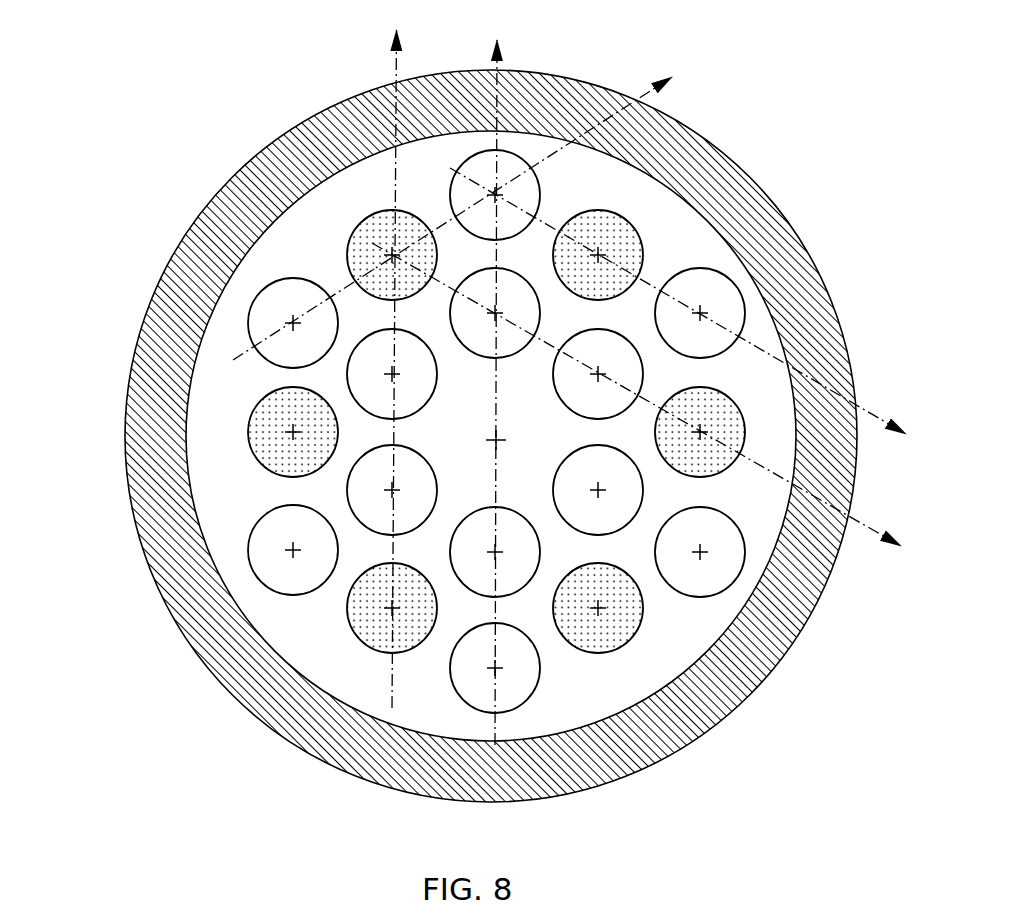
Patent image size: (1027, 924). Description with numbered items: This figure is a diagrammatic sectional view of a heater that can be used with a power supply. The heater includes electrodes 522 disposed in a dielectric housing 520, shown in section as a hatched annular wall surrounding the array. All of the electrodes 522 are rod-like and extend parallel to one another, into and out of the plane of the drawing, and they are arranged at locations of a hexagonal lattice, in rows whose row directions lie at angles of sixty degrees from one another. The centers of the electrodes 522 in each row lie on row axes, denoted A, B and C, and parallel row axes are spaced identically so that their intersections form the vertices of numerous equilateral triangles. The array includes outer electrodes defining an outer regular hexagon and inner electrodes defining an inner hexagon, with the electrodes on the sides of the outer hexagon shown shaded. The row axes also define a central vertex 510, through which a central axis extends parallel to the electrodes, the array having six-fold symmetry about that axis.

The central vertex 510 is at (496, 440).
The dielectric housing 520 is at (280, 157).
The electrodes 522 is at (280, 292).